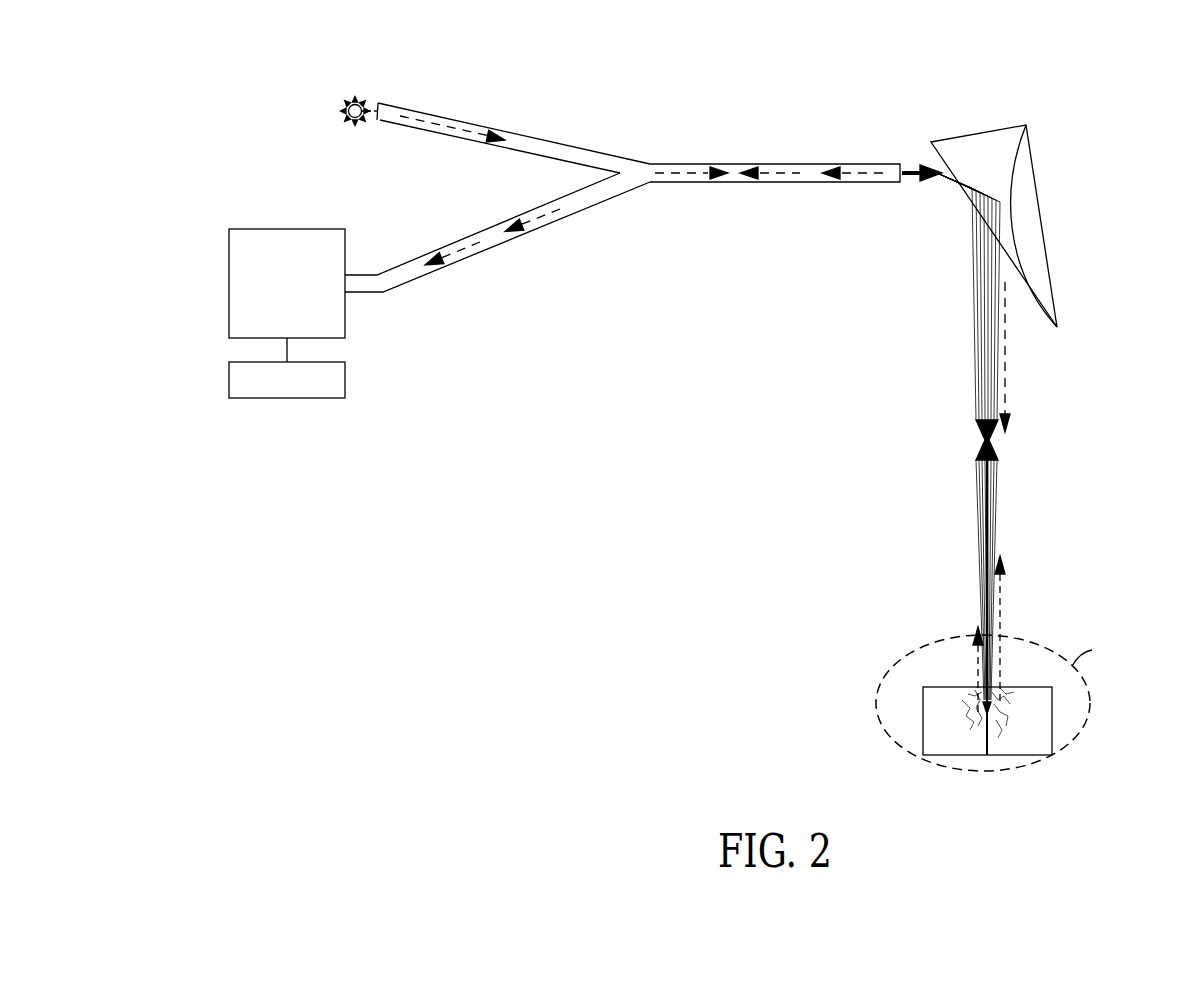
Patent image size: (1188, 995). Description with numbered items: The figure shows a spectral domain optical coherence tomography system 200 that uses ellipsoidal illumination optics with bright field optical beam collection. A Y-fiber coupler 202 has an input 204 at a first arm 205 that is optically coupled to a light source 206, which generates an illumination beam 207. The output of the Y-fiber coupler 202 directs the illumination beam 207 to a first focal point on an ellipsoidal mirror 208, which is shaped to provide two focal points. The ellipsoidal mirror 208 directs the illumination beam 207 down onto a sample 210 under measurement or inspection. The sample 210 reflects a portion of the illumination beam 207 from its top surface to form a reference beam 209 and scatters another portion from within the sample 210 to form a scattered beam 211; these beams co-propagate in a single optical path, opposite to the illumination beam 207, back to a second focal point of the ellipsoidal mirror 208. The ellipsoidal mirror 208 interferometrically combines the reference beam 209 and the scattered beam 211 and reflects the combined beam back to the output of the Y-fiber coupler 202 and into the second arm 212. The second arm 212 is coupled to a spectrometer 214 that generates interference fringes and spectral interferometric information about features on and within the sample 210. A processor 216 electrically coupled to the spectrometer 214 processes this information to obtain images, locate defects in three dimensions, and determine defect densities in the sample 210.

The spectral domain optical coherence tomography system 200 is at (972, 94).
The Y-fiber coupler 202 is at (622, 186).
The input 204 is at (324, 100).
The first arm 205 is at (466, 141).
The light source 206 is at (345, 117).
The illumination beam 207 is at (486, 121).
The ellipsoidal mirror 208 is at (1042, 228).
The reference beam 209 is at (1003, 605).
The sample 210 is at (1052, 720).
The scattered beam 211 is at (977, 667).
The second arm 212 is at (497, 237).
The spectrometer 214 is at (287, 229).
The processor 216 is at (229, 381).